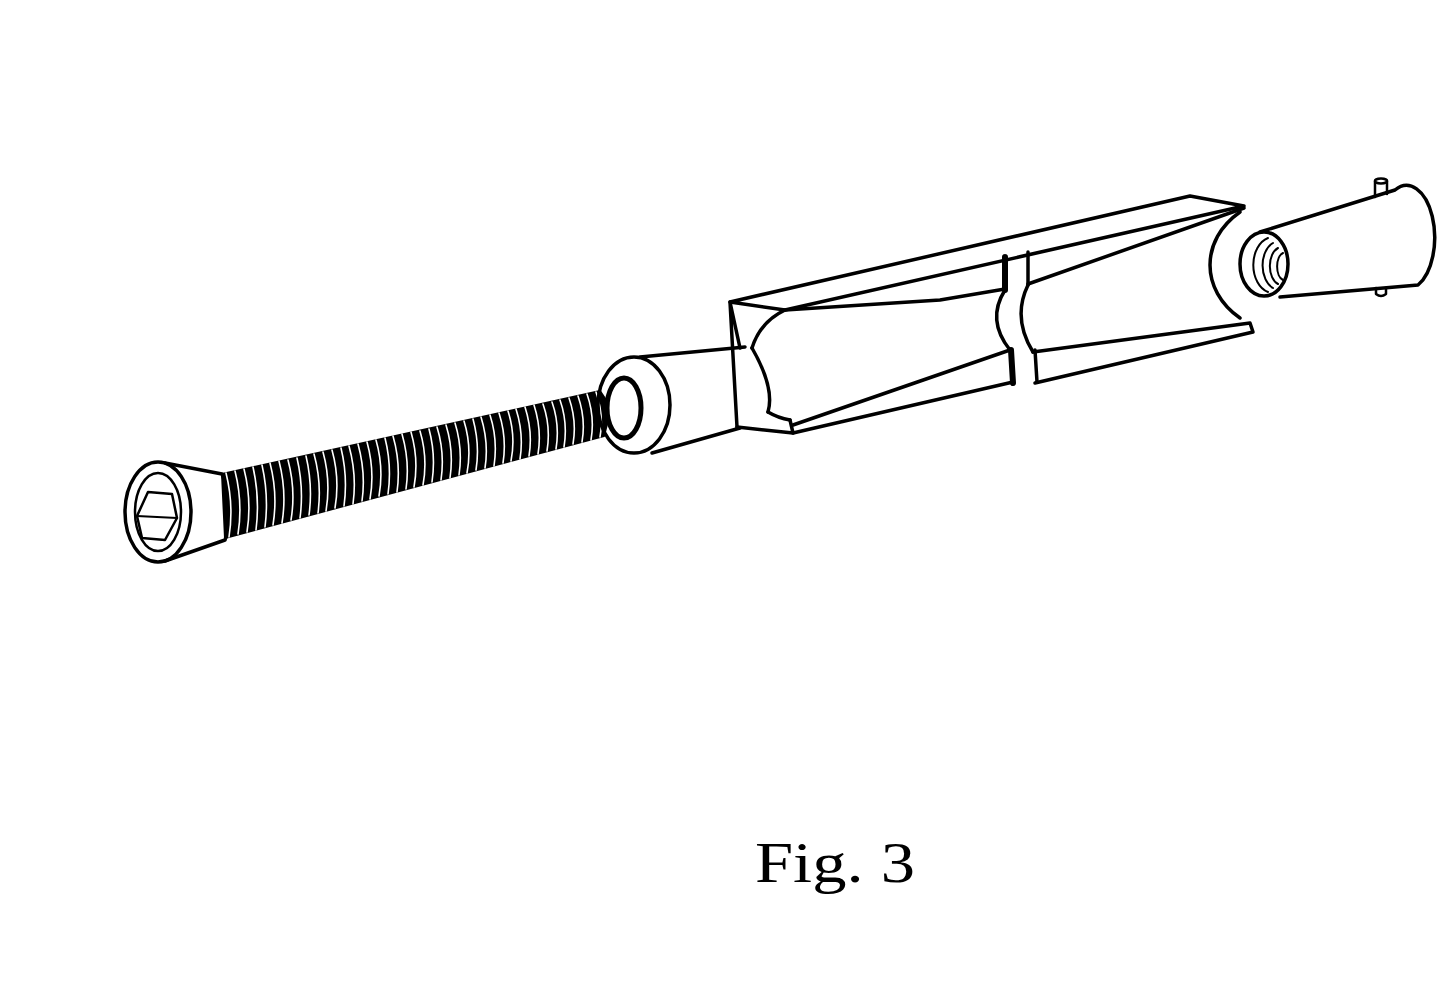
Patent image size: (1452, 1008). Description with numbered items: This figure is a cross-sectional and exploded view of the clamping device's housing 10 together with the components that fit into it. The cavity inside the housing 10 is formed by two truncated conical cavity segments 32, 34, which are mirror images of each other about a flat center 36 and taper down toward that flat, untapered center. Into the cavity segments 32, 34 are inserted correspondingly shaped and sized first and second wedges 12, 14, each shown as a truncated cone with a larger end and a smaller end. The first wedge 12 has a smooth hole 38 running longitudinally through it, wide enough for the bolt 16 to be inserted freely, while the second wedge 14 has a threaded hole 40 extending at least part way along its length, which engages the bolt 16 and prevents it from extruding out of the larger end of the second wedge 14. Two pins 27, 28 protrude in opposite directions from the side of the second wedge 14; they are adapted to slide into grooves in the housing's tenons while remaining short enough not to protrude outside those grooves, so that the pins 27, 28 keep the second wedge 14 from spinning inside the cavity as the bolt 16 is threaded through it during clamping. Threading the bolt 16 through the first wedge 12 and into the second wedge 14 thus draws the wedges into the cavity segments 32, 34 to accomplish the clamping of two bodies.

The housing 10 is at (986, 331).
The first wedge 12 is at (640, 410).
The second wedge 14 is at (1297, 254).
The bolt 16 is at (465, 475).
The pin 27 is at (1378, 178).
The pin 28 is at (1377, 297).
The cavity segment 32 is at (833, 362).
The cavity segment 34 is at (1115, 297).
The flat center 36 is at (993, 262).
The smooth hole 38 is at (625, 420).
The threaded hole 40 is at (1262, 297).